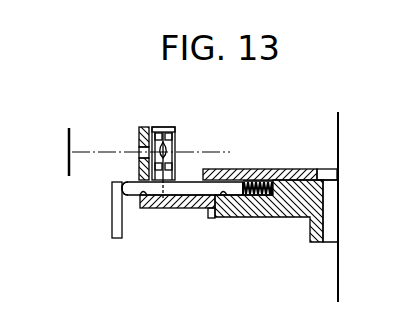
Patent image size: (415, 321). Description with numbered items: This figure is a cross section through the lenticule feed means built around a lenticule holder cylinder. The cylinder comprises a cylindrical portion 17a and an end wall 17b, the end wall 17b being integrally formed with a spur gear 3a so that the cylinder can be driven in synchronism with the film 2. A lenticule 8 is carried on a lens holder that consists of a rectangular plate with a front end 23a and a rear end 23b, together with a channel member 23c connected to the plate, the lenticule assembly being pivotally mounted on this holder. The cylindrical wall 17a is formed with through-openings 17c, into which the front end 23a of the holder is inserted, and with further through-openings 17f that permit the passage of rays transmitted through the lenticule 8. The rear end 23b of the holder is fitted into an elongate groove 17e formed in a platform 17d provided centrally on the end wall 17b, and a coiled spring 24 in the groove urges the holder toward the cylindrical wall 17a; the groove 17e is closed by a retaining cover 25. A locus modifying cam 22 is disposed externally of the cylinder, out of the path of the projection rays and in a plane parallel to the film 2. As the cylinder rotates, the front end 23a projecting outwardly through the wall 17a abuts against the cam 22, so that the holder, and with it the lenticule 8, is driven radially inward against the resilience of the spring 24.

The film 2 is at (66, 138).
The cylindrical portion 17a is at (144, 127).
The through-openings 17f is at (140, 148).
The channel member 23c is at (166, 127).
The lenticule 8 is at (164, 148).
The rear end 23b is at (232, 182).
The front end 23a is at (122, 184).
The locus modifying cam 22 is at (112, 228).
The end wall 17b is at (176, 212).
The through-openings 17c is at (141, 195).
The spur gear 3a is at (209, 217).
The platform 17d is at (301, 183).
The elongate groove 17e is at (223, 194).
The retaining cover 25 is at (267, 170).
The coiled spring 24 is at (257, 196).